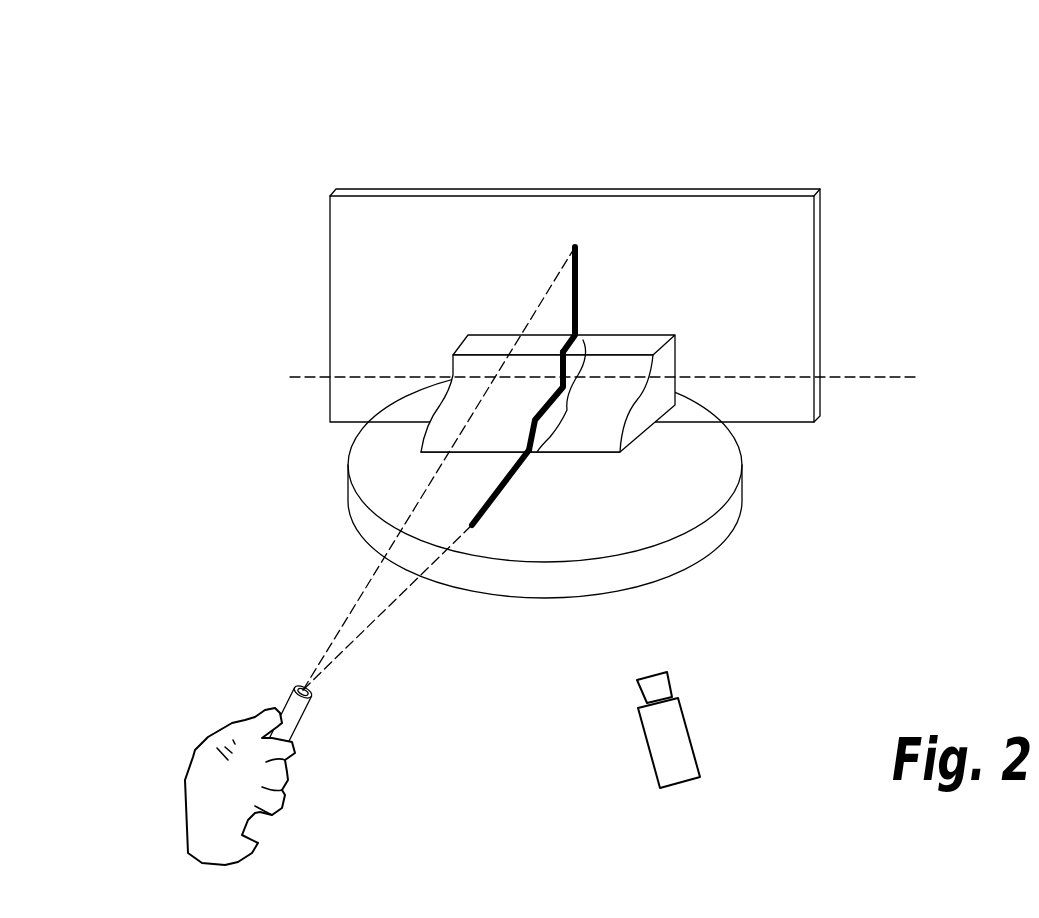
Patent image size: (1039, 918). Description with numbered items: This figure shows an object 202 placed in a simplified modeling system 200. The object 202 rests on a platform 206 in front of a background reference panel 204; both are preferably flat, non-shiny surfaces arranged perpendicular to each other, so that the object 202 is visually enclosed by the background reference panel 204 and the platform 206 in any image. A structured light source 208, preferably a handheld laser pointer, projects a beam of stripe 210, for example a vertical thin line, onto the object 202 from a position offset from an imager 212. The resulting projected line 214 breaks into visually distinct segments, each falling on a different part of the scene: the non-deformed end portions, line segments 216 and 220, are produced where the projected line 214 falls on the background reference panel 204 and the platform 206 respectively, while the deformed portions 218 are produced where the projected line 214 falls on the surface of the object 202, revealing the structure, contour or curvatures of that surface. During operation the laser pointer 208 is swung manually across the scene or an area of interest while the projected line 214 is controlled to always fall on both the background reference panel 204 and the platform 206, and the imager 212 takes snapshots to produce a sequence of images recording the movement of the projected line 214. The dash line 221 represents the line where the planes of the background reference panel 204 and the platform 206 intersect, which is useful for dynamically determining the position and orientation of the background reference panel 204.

The modeling system 200 is at (1031, 102).
The object 202 is at (556, 414).
The background reference panel 204 is at (627, 294).
The platform 206 is at (583, 483).
The structured light source 208 is at (306, 774).
The beam of stripe 210 is at (339, 732).
The imager 212 is at (715, 730).
The projected line 214 is at (579, 329).
The line segment 216 is at (587, 247).
The deformed portions 218 is at (578, 396).
The line segment 220 is at (532, 457).
The dash line 221 is at (634, 340).